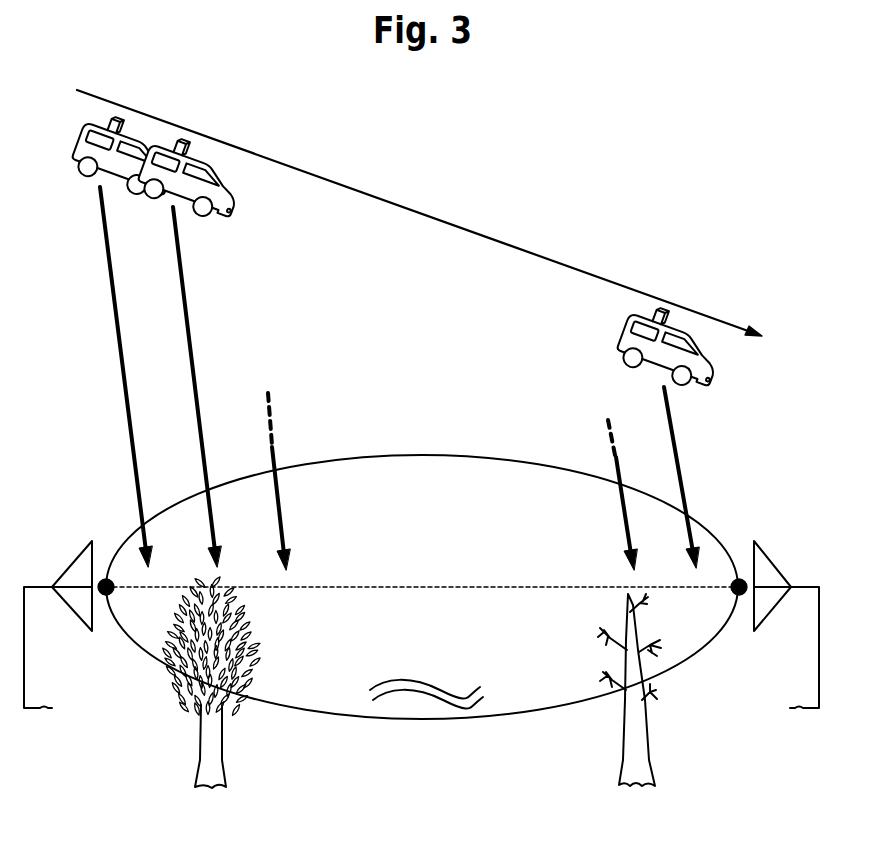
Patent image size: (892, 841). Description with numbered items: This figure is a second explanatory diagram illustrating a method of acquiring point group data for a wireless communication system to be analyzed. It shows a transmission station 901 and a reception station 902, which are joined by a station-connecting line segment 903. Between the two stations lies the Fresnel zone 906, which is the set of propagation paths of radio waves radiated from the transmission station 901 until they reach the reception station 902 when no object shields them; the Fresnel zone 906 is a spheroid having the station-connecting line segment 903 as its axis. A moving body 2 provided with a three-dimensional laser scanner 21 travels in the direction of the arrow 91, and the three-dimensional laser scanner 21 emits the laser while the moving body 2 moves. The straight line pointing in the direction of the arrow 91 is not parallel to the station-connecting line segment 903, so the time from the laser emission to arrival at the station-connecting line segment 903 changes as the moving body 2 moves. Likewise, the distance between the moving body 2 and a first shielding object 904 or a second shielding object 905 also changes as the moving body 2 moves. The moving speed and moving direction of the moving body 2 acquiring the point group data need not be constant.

The moving body 2 is at (146, 144).
The three-dimensional laser scanner 21 is at (120, 113).
The arrow 91 is at (425, 213).
The transmission station 901 is at (77, 565).
The reception station 902 is at (770, 562).
The station-connecting line segment 903 is at (430, 585).
The first shielding object 904 is at (222, 733).
The second shielding object 905 is at (648, 735).
The Fresnel zone 906 is at (445, 453).